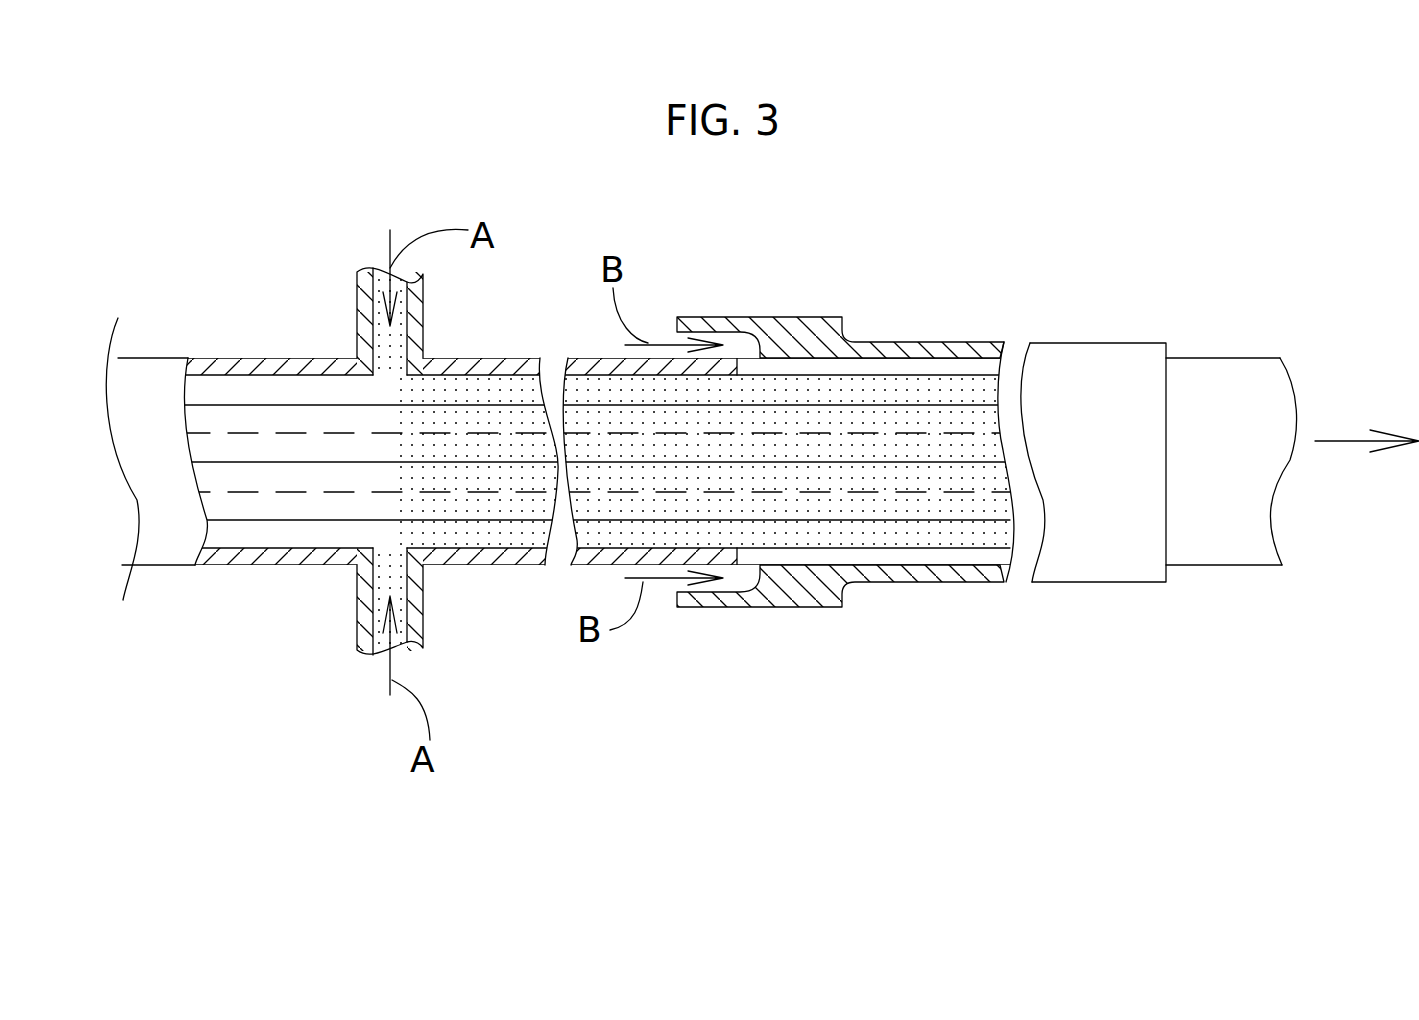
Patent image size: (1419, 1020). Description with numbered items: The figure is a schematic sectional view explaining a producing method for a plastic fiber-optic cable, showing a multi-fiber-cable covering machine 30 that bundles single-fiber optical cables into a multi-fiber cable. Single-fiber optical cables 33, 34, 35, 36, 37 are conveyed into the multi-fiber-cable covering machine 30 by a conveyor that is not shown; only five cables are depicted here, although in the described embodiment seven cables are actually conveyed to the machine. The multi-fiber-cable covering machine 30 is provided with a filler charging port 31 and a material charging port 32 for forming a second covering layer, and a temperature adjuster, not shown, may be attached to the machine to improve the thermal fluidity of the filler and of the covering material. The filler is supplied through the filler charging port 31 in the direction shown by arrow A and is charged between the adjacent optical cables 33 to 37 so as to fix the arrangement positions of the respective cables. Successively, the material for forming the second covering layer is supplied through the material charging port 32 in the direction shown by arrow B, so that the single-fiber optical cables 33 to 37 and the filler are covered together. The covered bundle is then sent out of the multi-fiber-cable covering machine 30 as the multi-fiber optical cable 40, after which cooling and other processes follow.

The multi-fiber-cable covering machine 30 is at (937, 292).
The filler charging port 31 is at (412, 302).
The material charging port 32 is at (698, 318).
The single-fiber optical cable 33 is at (237, 420).
The single-fiber optical cable 34 is at (238, 503).
The single-fiber optical cable 35 is at (276, 392).
The single-fiber optical cable 36 is at (352, 468).
The single-fiber optical cable 37 is at (280, 540).
The multi-fiber optical cable 40 is at (1217, 532).